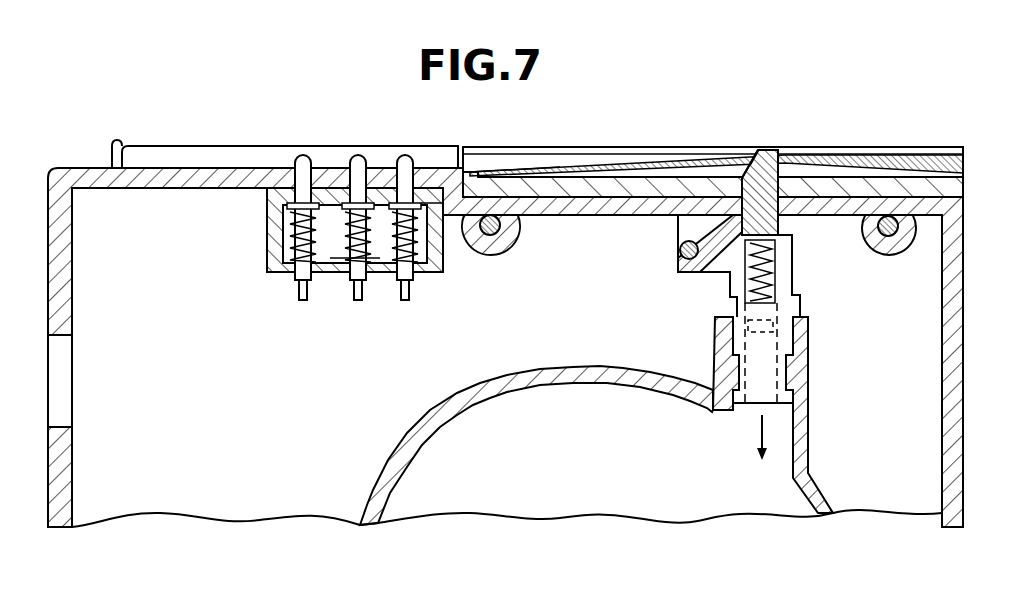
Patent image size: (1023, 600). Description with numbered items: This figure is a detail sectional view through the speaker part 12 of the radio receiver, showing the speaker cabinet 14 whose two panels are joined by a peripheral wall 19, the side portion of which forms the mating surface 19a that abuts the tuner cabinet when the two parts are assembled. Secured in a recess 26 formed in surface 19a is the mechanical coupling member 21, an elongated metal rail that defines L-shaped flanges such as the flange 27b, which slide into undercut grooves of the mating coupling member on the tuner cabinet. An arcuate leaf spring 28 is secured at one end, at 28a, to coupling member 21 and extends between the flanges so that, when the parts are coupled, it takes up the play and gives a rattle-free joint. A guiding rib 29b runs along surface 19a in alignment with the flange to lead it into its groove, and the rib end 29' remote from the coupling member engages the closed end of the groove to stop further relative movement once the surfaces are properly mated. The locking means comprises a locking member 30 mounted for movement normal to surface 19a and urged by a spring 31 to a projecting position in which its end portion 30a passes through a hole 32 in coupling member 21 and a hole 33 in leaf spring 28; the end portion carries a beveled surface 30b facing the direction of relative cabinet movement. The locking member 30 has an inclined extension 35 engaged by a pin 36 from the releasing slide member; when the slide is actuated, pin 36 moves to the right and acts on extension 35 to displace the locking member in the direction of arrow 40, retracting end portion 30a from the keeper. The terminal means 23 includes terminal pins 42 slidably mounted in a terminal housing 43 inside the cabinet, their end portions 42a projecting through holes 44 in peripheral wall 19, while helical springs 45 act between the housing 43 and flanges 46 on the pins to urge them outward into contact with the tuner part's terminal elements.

The speaker part 12 is at (716, 133).
The speaker cabinet 14 is at (968, 327).
The peripheral wall 19 is at (62, 281).
The mating surface 19a is at (97, 133).
The mechanical coupling member 21 is at (755, 136).
The terminal means 23 is at (342, 227).
The recess 26 is at (960, 178).
The flange 27b is at (969, 128).
The arcuate leaf spring 28 is at (840, 157).
The secured end of leaf spring 28a is at (513, 141).
The rib end 29' is at (137, 130).
The guiding rib 29b is at (233, 126).
The locking member 30 is at (762, 162).
The end portion of locking member 30a is at (838, 145).
The beveled surface 30b is at (753, 152).
The spring 31 is at (776, 252).
The hole in coupling member 32 is at (745, 170).
The hole in spring 33 is at (759, 147).
The inclined extension 35 is at (704, 270).
The pin 36 is at (688, 266).
The arrow indicating direction of displacement 40 is at (741, 437).
The terminal pin 42 is at (302, 237).
The end portion of terminal pin 42a is at (360, 158).
The terminal housing 43 is at (272, 231).
The hole in peripheral wall 44 is at (381, 200).
The helical spring 45 is at (387, 242).
The flange on terminal pin 46 is at (428, 212).